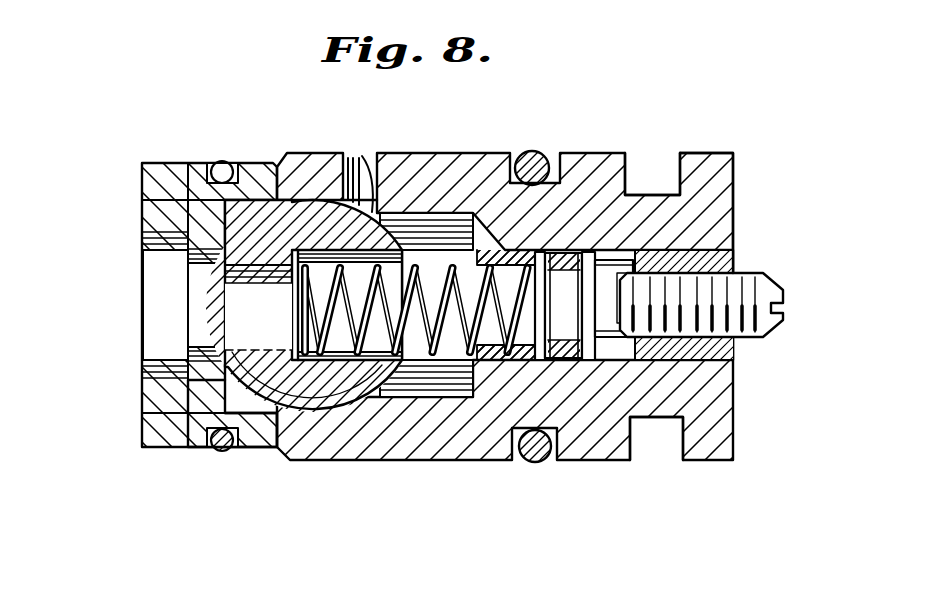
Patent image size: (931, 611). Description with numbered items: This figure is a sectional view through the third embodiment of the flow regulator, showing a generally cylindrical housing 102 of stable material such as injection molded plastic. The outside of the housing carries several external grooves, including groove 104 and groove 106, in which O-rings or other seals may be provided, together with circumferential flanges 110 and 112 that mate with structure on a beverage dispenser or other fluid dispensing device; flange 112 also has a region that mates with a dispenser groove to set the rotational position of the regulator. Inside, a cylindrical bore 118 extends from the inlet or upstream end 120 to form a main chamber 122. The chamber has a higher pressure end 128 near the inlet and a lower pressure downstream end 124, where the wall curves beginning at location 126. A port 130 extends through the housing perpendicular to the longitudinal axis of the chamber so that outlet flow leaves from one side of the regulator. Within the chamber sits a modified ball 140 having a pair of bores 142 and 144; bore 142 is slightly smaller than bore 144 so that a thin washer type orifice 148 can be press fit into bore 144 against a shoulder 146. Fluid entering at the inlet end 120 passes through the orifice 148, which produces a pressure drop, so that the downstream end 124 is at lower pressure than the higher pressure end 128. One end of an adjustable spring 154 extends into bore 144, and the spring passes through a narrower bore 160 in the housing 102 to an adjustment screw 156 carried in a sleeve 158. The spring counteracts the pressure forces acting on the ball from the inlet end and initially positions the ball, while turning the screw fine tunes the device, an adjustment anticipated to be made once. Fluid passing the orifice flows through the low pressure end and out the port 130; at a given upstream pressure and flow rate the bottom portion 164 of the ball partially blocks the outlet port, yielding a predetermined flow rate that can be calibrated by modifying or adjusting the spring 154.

The housing 102 is at (593, 153).
The external groove 104 is at (543, 462).
The external groove 106 is at (660, 193).
The circumferential flange 110 is at (720, 153).
The circumferential flange 112 is at (622, 462).
The cylindrical bore 118 is at (150, 200).
The inlet or upstream end 120 is at (130, 373).
The main chamber 122 is at (253, 410).
The downstream end 124 is at (423, 400).
The curve beginning 126 is at (385, 398).
The higher pressure end 128 is at (232, 213).
The port 130 is at (367, 167).
The ball 140 is at (307, 400).
The bore 142 is at (226, 284).
The bore 144 is at (432, 368).
The shoulder 146 is at (300, 225).
The orifice 148 is at (292, 306).
The adjustable spring 154 is at (453, 260).
The adjustment screw 156 is at (767, 330).
The sleeve 158 is at (735, 343).
The narrower bore 160 is at (665, 240).
The bottom portion of ball 164 is at (343, 162).